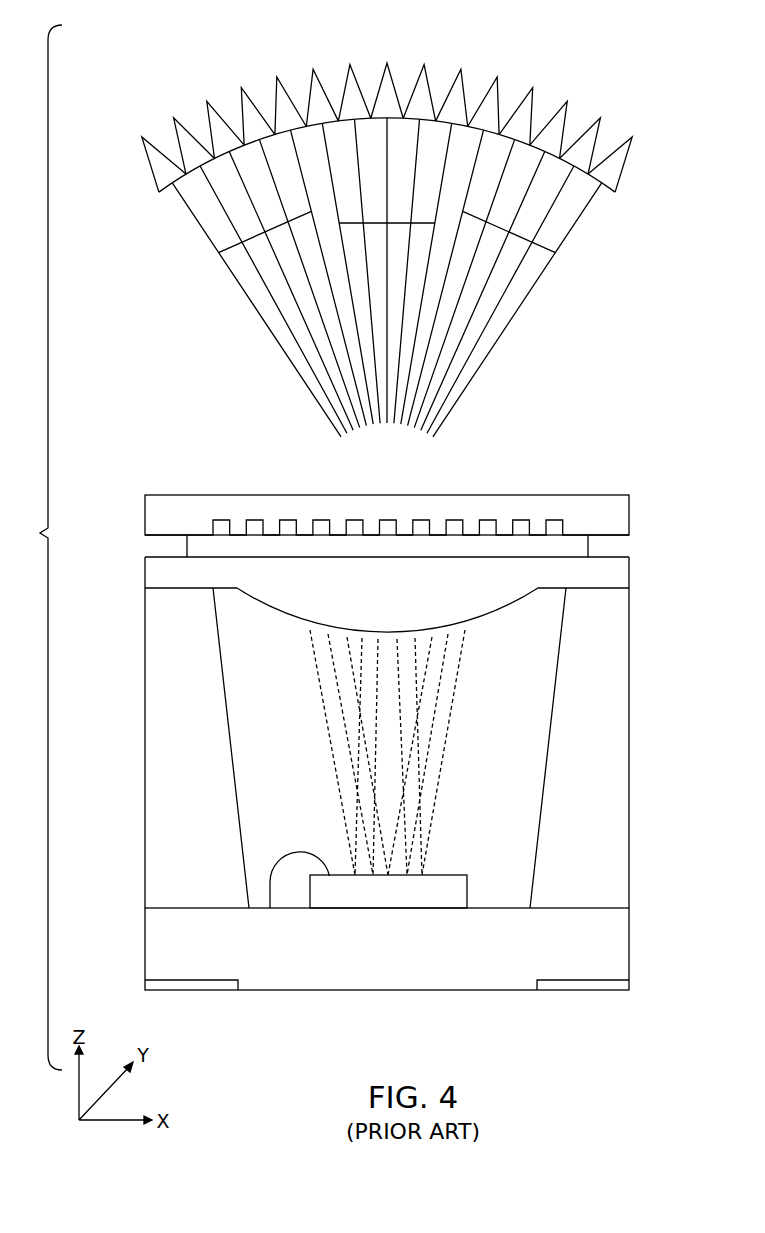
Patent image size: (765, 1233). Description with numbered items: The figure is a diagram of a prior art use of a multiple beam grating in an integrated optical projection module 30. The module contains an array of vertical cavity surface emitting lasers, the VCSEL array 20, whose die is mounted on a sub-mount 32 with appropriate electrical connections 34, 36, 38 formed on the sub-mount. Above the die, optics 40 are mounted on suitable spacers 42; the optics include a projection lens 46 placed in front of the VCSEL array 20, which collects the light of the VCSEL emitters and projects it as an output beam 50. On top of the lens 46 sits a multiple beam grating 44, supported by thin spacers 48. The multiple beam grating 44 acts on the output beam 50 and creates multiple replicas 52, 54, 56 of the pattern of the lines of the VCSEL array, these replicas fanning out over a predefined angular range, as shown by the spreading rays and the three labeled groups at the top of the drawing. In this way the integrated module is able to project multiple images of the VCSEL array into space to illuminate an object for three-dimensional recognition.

The VCSEL array 20 is at (467, 890).
The integrated optical projection module 30 is at (170, 396).
The sub-mount 32 is at (160, 948).
The electrical connection 34 is at (188, 985).
The electrical connection 36 is at (603, 985).
The electrical connection 38 is at (270, 882).
The optics 40 is at (638, 495).
The spacers 42 is at (163, 775).
The multiple beam grating 44 is at (160, 510).
The projection lens 46 is at (305, 600).
The thin spacers 48 is at (158, 548).
The output beam 50 is at (250, 302).
The replica of the VCSEL array pattern 52 is at (285, 62).
The replica of the VCSEL array pattern 54 is at (468, 66).
The replica of the VCSEL array pattern 56 is at (552, 114).